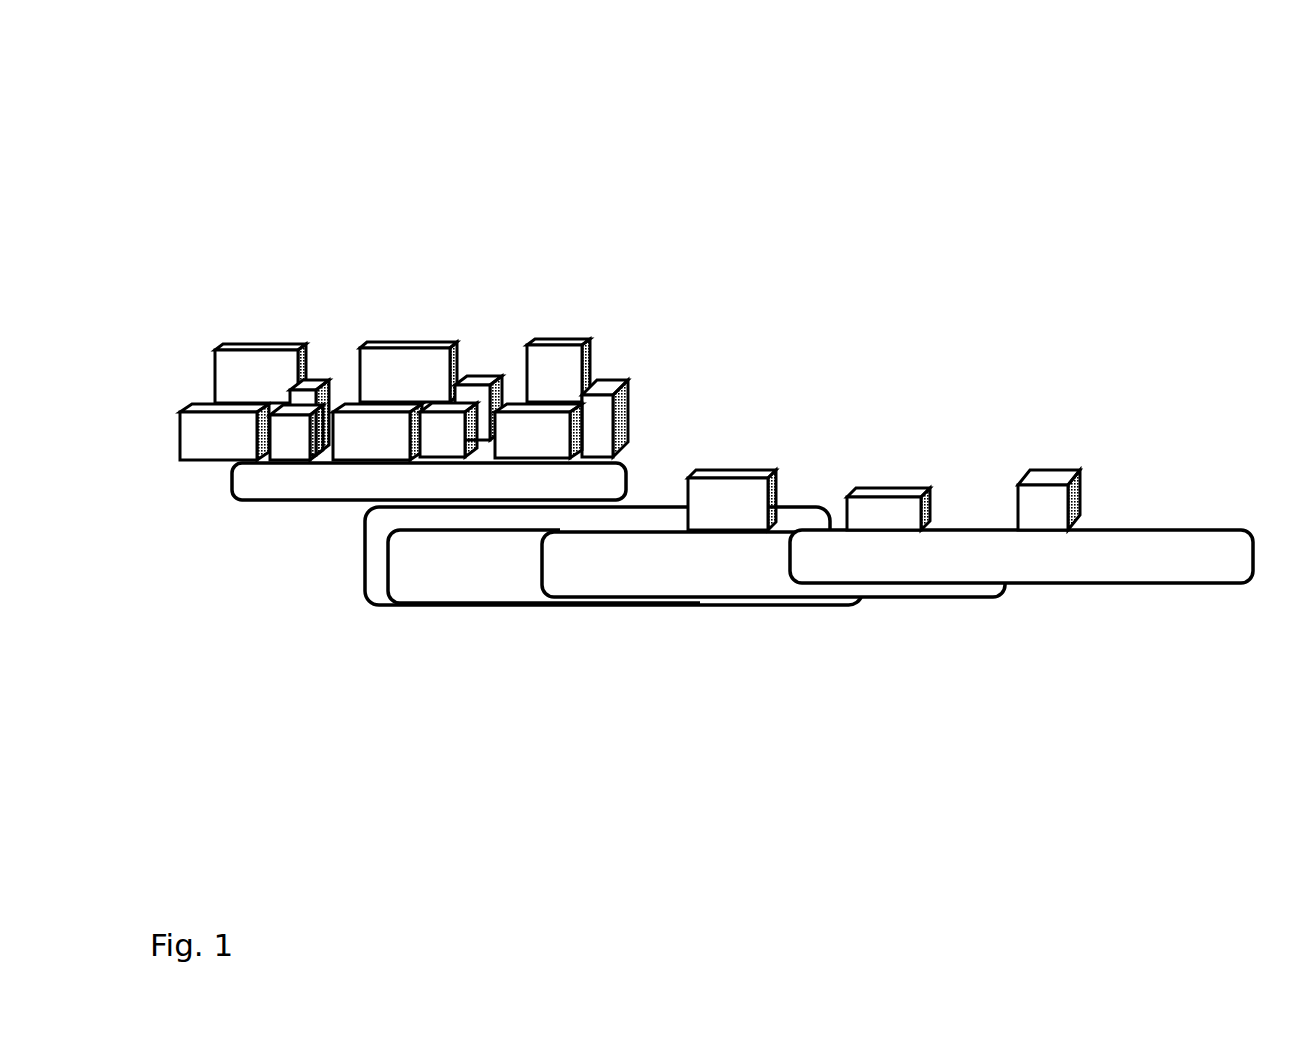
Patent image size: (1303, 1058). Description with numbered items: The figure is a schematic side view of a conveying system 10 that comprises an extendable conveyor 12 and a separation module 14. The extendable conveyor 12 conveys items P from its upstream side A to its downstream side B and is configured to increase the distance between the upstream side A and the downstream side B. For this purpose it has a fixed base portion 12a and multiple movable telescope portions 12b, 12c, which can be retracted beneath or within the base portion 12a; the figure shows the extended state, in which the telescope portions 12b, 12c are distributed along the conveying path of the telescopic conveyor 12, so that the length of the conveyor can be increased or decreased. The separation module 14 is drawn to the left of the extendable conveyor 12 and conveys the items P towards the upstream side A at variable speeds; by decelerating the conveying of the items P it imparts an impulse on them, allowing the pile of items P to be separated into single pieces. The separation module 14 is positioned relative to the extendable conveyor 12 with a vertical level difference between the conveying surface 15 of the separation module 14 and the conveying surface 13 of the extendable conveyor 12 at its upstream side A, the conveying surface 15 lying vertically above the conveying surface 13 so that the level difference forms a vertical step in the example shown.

The conveying system 10 is at (240, 118).
The extendable conveyor 12 is at (809, 564).
The fixed base portion 12a is at (544, 566).
The movable telescope portion 12b is at (773, 564).
The movable telescope portion 12c is at (1021, 556).
The conveying surface of the extendable conveyor 13 is at (1190, 530).
The separation module 14 is at (289, 516).
The conveying surface of the separation module 15 is at (561, 298).
The items P is at (572, 326).
The upstream side A is at (613, 750).
The downstream side B is at (1243, 735).